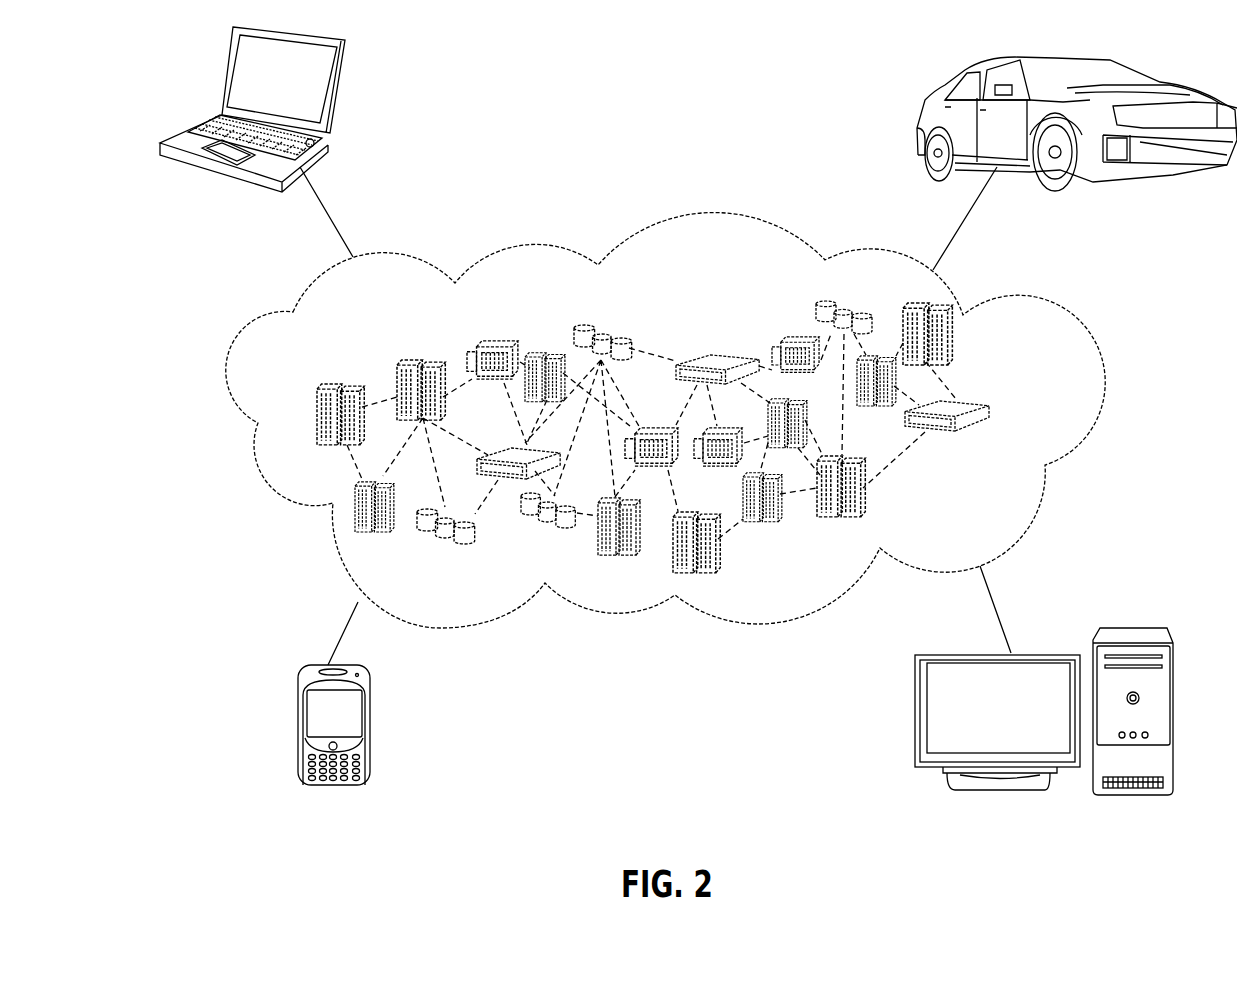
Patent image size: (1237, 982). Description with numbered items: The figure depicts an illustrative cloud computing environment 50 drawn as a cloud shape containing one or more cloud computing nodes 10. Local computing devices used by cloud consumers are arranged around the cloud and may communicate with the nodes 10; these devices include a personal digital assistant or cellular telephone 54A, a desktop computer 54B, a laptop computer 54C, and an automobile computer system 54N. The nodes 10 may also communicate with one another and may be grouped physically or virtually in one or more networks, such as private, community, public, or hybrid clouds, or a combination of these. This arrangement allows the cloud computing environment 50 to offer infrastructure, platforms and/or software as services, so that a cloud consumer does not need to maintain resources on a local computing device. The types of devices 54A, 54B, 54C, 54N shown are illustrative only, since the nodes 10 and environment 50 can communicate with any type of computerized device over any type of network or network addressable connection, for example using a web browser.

The cloud computing environment 50 is at (1053, 327).
The cloud computing nodes 10 is at (1028, 414).
The personal digital assistant (PDA) or cellular telephone 54A is at (300, 728).
The desktop computer 54B is at (1137, 625).
The laptop computer 54C is at (340, 92).
The automobile computer system 54N is at (922, 96).